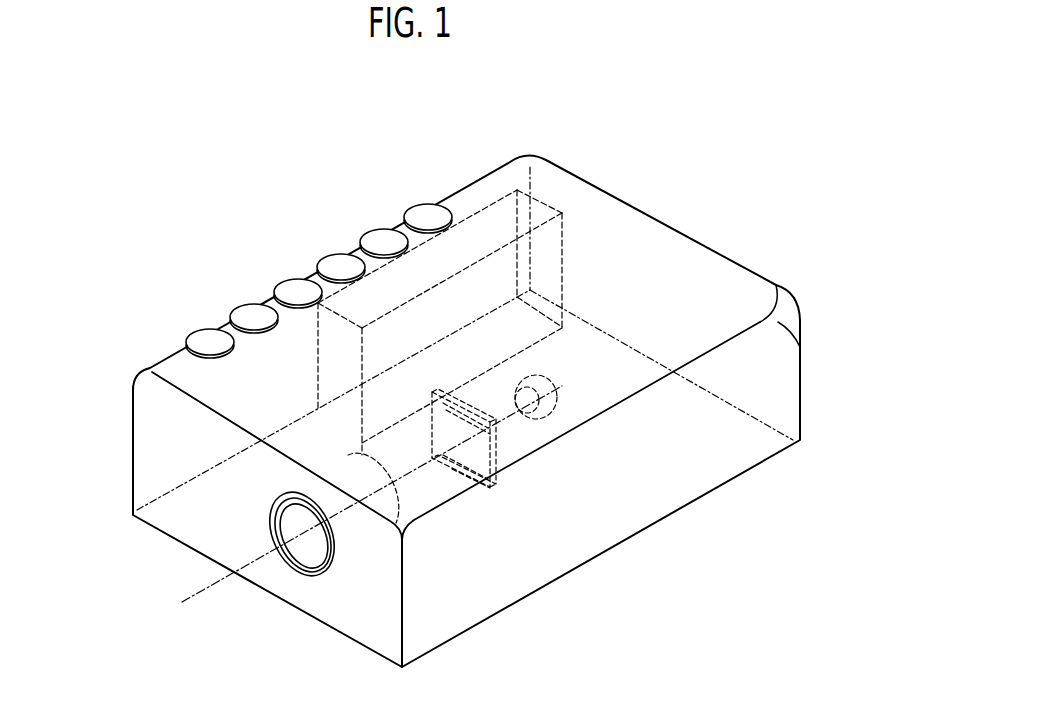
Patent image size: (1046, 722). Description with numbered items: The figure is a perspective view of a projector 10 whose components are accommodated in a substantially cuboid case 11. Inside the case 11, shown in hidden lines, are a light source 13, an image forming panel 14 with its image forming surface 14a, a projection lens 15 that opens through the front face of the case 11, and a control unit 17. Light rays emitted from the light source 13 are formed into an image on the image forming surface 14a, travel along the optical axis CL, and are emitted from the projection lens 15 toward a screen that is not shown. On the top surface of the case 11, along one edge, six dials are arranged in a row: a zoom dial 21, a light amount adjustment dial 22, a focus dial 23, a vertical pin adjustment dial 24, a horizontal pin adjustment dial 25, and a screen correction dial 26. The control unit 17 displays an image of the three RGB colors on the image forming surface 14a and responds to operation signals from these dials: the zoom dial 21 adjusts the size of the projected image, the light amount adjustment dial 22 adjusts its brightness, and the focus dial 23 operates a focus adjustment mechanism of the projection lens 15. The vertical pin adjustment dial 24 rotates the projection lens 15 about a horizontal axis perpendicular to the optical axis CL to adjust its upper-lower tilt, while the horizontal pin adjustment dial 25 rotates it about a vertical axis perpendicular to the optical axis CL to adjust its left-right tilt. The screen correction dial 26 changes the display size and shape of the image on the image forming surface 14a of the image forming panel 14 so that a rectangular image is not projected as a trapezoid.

The projector 10 is at (722, 220).
The case 11 is at (633, 223).
The light source 13 is at (545, 385).
The image forming panel 14 is at (518, 453).
The image forming surface 14a is at (462, 462).
The projection lens 15 is at (296, 566).
The control unit 17 is at (543, 198).
The zoom dial 21 is at (202, 340).
The light amount adjustment dial 22 is at (247, 313).
The focus dial 23 is at (290, 287).
The vertical pin adjustment dial 24 is at (337, 262).
The horizontal pin adjustment dial 25 is at (378, 237).
The screen correction dial 26 is at (423, 210).
The optical axis CL is at (200, 590).